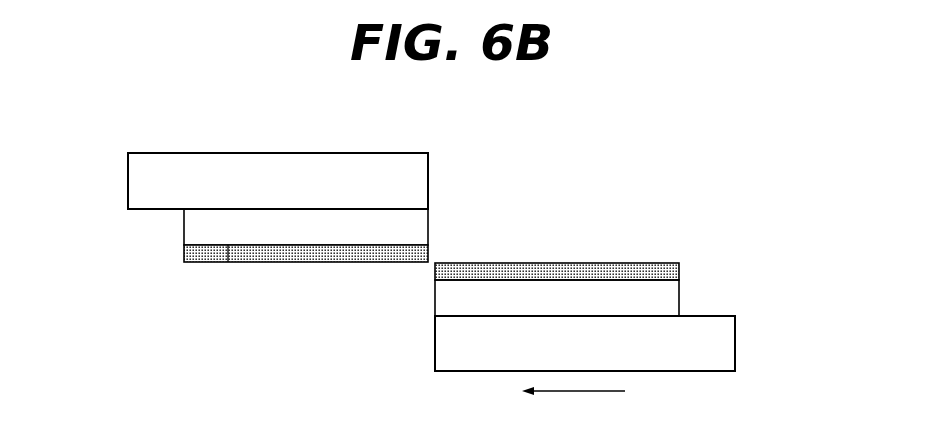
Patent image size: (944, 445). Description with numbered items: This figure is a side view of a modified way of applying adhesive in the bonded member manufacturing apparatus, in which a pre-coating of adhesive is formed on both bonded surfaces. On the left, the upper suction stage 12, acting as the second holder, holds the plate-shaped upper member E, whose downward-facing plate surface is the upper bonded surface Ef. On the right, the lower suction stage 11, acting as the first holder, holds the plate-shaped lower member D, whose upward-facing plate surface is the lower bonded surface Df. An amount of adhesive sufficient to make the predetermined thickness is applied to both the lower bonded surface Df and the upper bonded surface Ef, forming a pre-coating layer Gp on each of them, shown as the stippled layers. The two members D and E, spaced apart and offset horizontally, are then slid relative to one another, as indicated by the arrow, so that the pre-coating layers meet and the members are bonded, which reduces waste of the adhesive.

The upper suction stage 12 is at (128, 183).
The upper member E is at (184, 228).
The pre-coating layer Gp is at (285, 263).
The upper bonded surface Ef is at (228, 263).
The lower bonded surface Df is at (621, 279).
The lower member D is at (680, 299).
The lower suction stage 11 is at (736, 345).